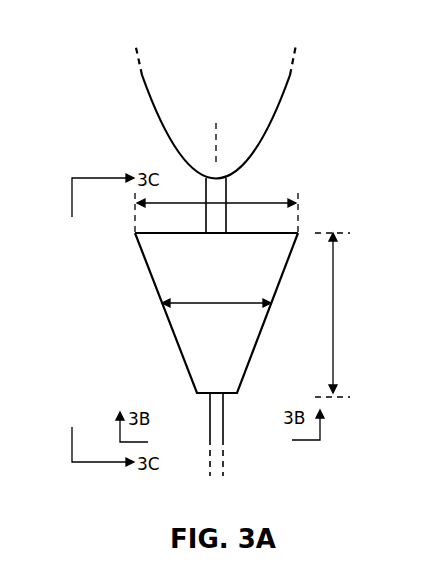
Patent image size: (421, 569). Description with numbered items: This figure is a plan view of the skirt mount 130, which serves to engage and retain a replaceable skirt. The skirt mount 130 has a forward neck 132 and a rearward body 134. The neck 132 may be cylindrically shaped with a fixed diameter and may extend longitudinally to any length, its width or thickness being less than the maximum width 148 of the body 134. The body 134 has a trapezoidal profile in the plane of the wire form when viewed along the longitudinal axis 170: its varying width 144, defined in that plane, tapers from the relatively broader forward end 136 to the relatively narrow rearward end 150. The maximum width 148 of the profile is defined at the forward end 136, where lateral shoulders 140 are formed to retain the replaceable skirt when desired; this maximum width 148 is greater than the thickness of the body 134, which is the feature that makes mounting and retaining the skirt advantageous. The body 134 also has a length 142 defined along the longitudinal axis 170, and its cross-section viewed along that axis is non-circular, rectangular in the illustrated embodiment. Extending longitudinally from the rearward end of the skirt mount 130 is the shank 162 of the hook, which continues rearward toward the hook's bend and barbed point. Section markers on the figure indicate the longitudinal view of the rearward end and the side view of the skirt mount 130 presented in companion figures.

The skirt mount 130 is at (116, 320).
The forward neck 132 is at (227, 181).
The body 134 is at (167, 272).
The forward end 136 is at (262, 232).
The lateral shoulders 140 is at (134, 239).
The length 142 is at (332, 320).
The varying width 144 is at (228, 309).
The maximum width 148 is at (275, 200).
The rearward end 150 is at (224, 400).
The shank 162 is at (211, 420).
The longitudinal axis 170 is at (217, 143).